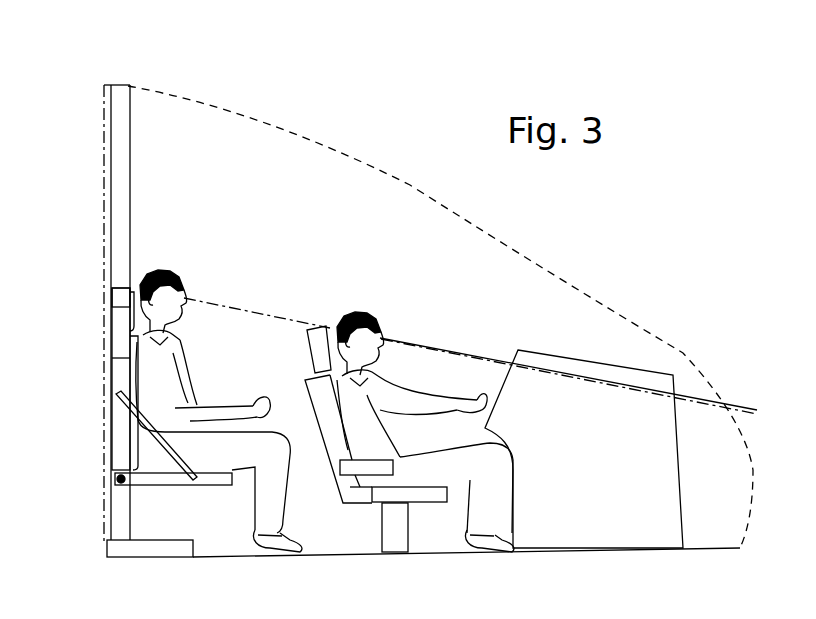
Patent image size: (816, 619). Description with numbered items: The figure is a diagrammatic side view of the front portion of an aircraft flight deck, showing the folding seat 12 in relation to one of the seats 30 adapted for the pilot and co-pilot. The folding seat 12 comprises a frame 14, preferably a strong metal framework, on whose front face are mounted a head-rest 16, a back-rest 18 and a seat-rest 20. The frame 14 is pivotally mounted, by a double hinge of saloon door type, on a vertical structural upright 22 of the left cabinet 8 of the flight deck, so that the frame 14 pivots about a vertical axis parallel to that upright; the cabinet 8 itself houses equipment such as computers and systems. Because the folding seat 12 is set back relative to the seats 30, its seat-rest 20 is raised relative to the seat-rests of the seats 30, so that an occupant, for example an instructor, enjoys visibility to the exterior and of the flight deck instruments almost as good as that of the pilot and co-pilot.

The cabinet 8 is at (103, 232).
The folding seat 12 is at (135, 370).
The frame 14 is at (120, 433).
The head-rest 16 is at (130, 305).
The back-rest 18 is at (130, 357).
The seat-rest 20 is at (153, 482).
The structural upright 22 is at (118, 90).
The seat 30 is at (432, 502).